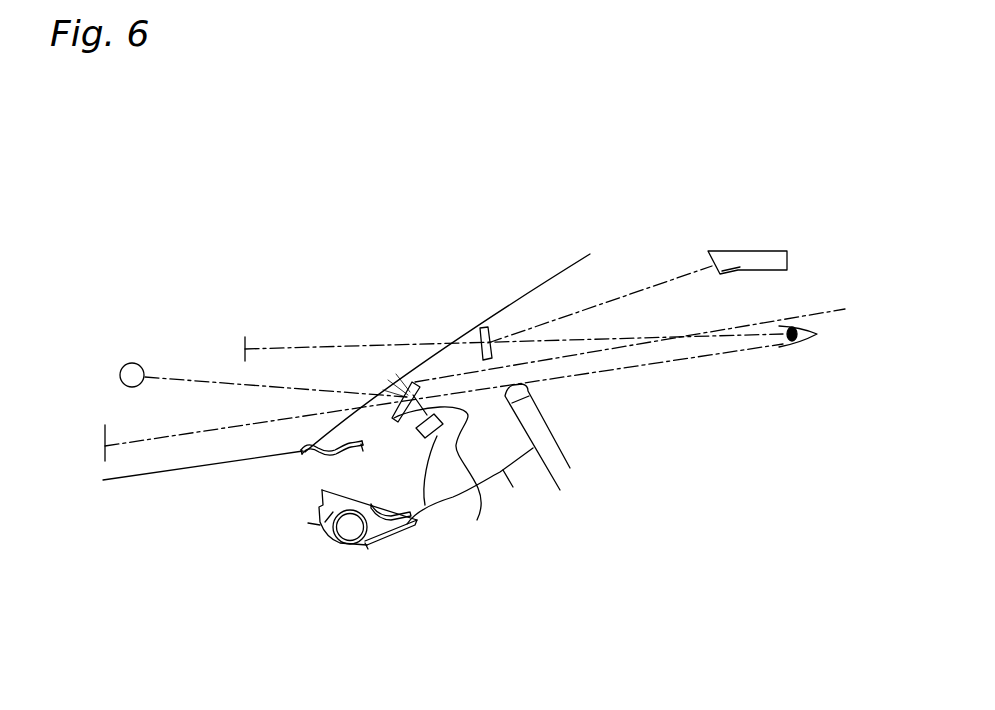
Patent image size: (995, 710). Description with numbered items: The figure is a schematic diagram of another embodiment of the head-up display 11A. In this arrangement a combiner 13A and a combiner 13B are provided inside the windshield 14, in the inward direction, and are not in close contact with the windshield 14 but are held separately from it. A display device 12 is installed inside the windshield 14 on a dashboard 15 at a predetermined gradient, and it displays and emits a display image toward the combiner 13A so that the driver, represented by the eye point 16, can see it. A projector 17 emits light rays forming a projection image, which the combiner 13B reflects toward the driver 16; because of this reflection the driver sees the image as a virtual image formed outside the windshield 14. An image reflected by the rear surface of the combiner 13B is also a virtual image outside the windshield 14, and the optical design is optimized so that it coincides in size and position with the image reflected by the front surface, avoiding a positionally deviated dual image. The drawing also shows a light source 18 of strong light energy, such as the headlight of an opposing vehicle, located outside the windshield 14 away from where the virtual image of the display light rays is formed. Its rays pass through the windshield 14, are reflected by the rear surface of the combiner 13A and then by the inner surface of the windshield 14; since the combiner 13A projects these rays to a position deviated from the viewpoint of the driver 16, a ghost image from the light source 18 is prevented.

The head-up display 11A is at (443, 223).
The display device 12 is at (452, 438).
The combiner 13A is at (394, 418).
The combiner 13B is at (492, 351).
The windshield 14 is at (511, 298).
The dashboard 15 is at (398, 440).
The driver (eye point) 16 is at (795, 326).
The projector 17 is at (746, 251).
The light source 18 is at (132, 363).